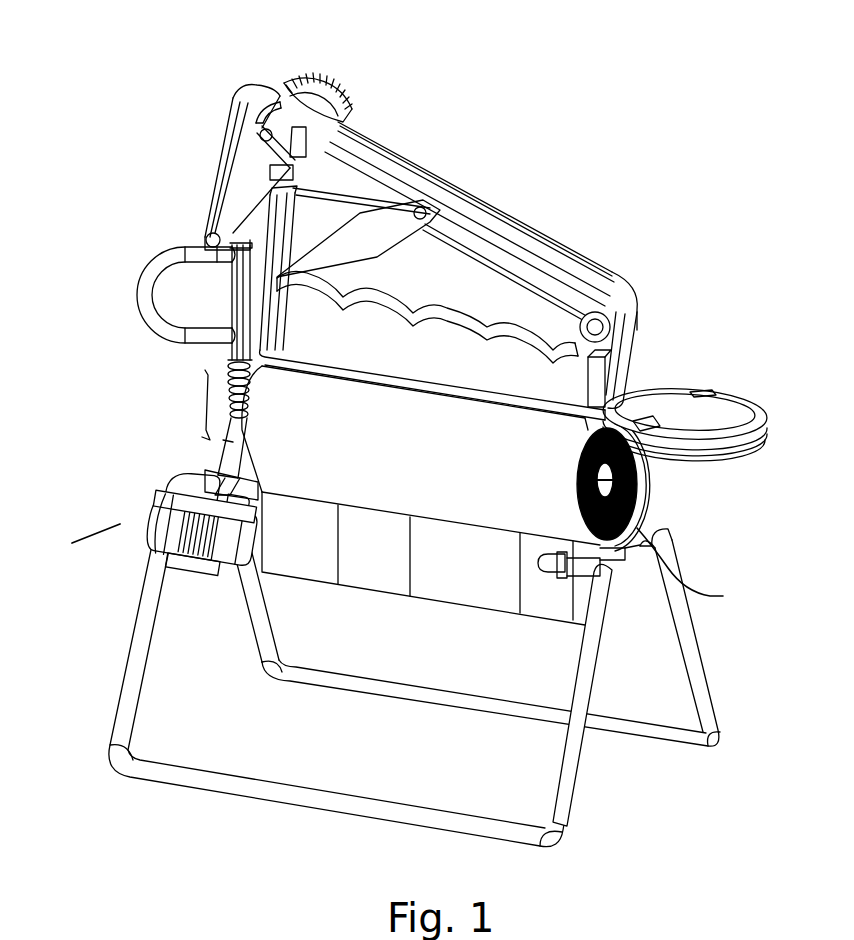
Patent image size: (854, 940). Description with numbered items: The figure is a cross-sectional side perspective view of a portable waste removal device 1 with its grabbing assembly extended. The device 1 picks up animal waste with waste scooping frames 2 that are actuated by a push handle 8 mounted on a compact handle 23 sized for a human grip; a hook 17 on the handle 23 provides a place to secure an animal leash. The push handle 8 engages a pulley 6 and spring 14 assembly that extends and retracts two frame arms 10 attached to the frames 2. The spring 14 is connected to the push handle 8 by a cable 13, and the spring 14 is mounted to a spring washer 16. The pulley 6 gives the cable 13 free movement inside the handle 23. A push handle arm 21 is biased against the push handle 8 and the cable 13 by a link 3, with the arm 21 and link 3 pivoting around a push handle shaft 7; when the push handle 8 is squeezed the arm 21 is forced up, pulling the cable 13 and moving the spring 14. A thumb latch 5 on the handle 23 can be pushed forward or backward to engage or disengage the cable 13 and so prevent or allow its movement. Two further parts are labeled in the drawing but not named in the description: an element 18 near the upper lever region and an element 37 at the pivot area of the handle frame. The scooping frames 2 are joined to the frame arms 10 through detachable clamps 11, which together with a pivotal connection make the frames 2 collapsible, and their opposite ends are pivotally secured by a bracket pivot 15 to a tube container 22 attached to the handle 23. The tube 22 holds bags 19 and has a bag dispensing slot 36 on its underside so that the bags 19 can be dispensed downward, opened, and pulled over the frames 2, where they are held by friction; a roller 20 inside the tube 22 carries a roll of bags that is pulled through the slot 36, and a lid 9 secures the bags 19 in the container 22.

The portable waste removal device 1 is at (45, 566).
The waste scooping frames 2 is at (547, 790).
The link 3 is at (371, 156).
The thumb latch 5 is at (334, 86).
The pulley 6 is at (262, 113).
The push handle shaft 7 is at (258, 130).
The push handle 8 is at (430, 290).
The lid 9 is at (682, 388).
The frame arms 10 is at (197, 572).
The detachable clamps 11 is at (162, 528).
The cable 13 is at (336, 132).
The spring 14 is at (223, 375).
The bracket pivot 15 is at (553, 578).
The spring washer 16 is at (218, 418).
The hook 17 is at (145, 256).
The lever 18 is at (210, 178).
The bags 19 is at (440, 606).
The roller 20 is at (550, 496).
The push handle arm 21 is at (389, 208).
The tube container 22 is at (712, 574).
The handle 23 is at (521, 228).
The bag dispensing slot 36 is at (613, 554).
The pivot boss 37 is at (607, 313).